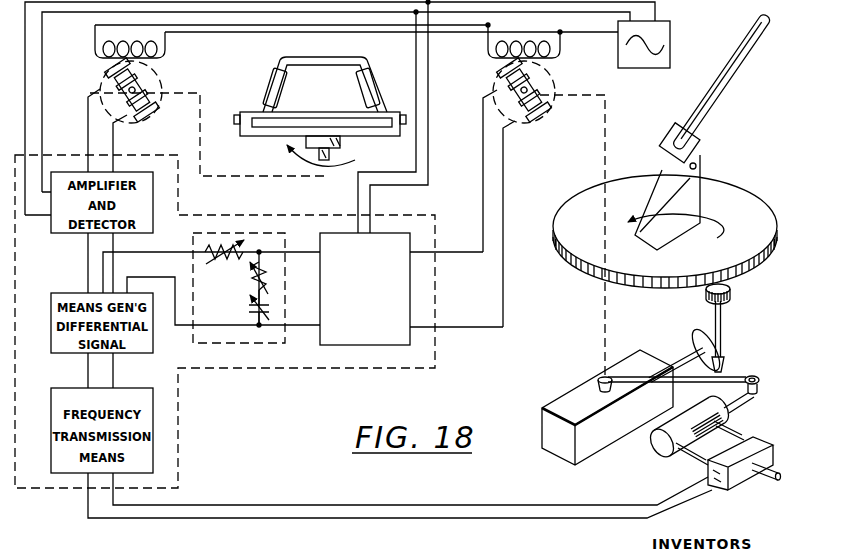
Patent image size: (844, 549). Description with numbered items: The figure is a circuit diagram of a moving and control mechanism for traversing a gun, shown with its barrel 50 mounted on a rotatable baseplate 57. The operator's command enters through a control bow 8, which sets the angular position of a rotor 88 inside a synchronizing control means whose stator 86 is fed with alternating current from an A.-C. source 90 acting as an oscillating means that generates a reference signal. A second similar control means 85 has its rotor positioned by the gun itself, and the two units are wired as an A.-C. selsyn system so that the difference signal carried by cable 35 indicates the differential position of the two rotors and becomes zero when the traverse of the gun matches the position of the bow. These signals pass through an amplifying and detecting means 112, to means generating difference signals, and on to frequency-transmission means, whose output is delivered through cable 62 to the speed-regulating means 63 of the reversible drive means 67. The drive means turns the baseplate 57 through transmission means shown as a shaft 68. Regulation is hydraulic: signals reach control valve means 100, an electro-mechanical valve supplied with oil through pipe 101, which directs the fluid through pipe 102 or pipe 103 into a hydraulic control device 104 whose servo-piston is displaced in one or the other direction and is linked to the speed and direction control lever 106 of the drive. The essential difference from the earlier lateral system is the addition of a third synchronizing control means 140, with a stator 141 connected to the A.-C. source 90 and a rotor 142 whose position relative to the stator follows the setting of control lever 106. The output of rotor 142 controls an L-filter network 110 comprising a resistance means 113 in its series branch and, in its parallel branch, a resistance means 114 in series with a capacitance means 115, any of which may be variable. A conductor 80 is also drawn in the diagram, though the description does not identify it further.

The control bow 8 is at (324, 61).
The cable 35 is at (88, 141).
The barrel 50 is at (712, 107).
The baseplate 57 is at (723, 198).
The cable 62 is at (466, 518).
The speed-regulating means 63 is at (763, 409).
The reversible drive means 67 is at (567, 403).
The shaft 68 is at (721, 327).
The conductor 80 is at (483, 164).
The control means 85 is at (172, 75).
The stator 86 is at (103, 59).
The rotor 88 is at (148, 118).
The A.-C. source 90 is at (668, 58).
The control valve means 100 is at (722, 478).
The pipe 101 is at (757, 480).
The pipe 102 is at (745, 441).
The pipe 103 is at (701, 460).
The hydraulic control device 104 is at (657, 452).
The speed and direction control lever 106 is at (730, 378).
The L-filter network 110 is at (264, 246).
The amplifying and detecting means 112 is at (380, 243).
The resistance means 113 is at (231, 263).
The resistance means 114 is at (270, 272).
The capacitance means 115 is at (272, 304).
The synchronizing control means 140 is at (490, 81).
The stator 141 is at (546, 61).
The rotor 142 is at (548, 116).